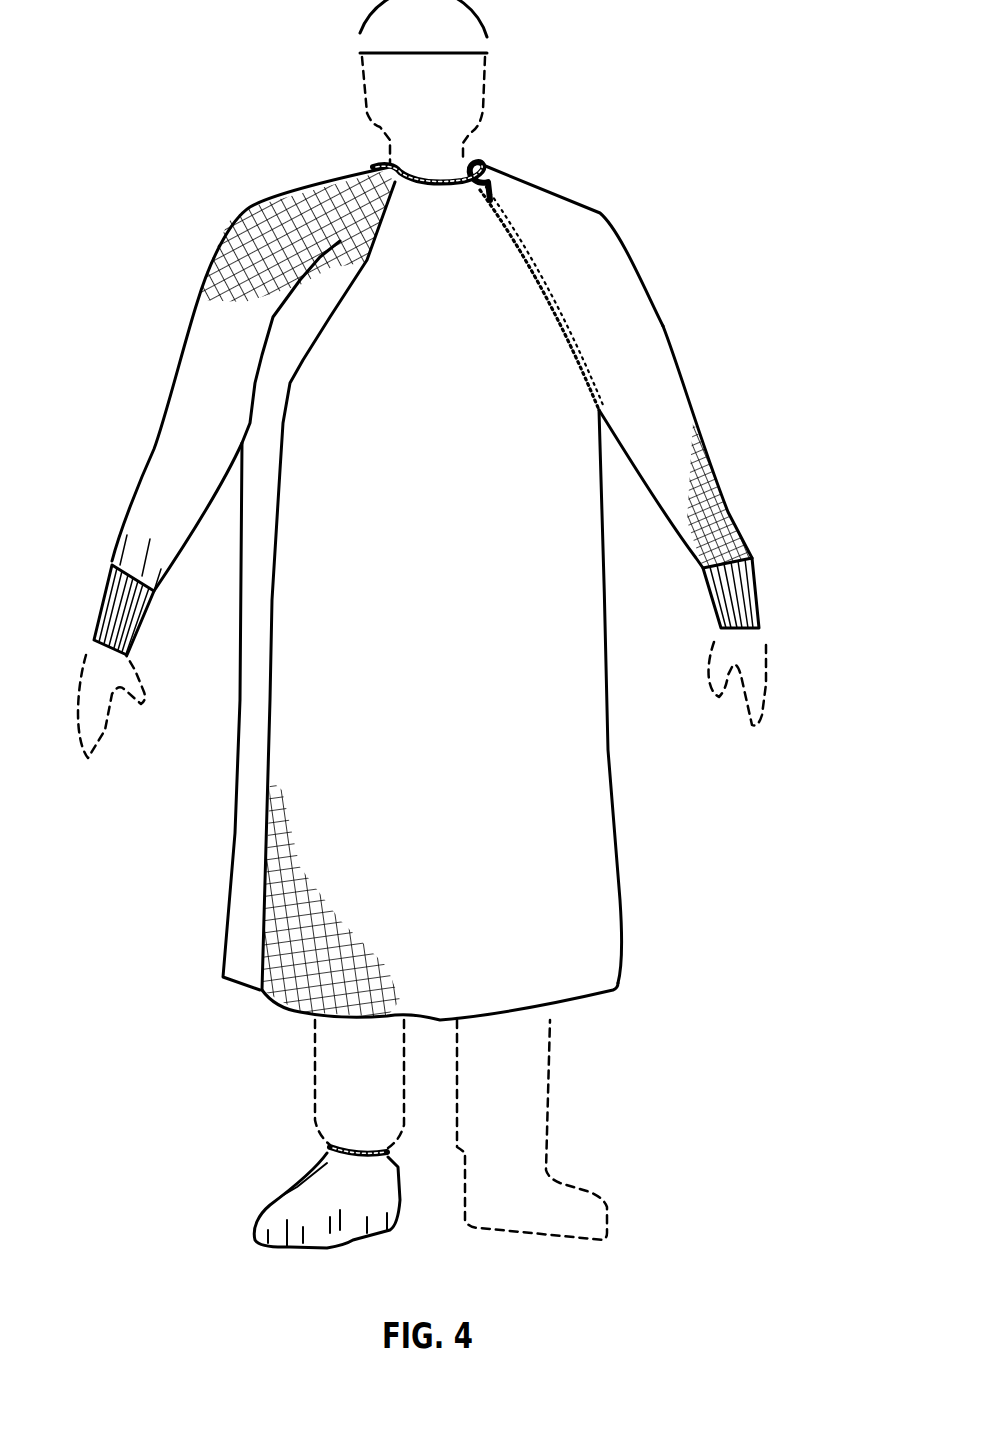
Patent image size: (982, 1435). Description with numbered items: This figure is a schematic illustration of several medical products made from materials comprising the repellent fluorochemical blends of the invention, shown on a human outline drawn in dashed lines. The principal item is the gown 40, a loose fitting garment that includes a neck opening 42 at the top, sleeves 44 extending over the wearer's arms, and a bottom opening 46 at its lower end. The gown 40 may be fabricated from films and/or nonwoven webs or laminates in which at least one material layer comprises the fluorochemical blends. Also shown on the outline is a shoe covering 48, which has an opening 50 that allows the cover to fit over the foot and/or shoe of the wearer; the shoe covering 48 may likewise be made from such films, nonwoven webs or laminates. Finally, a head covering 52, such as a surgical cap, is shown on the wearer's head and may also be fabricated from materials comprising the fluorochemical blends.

The gown 40 is at (378, 591).
The neck opening 42 is at (467, 162).
The sleeves 44 is at (659, 359).
The bottom opening 46 is at (513, 1013).
The shoe covering 48 is at (253, 1220).
The opening 50 is at (330, 1150).
The head covering 52 is at (363, 23).